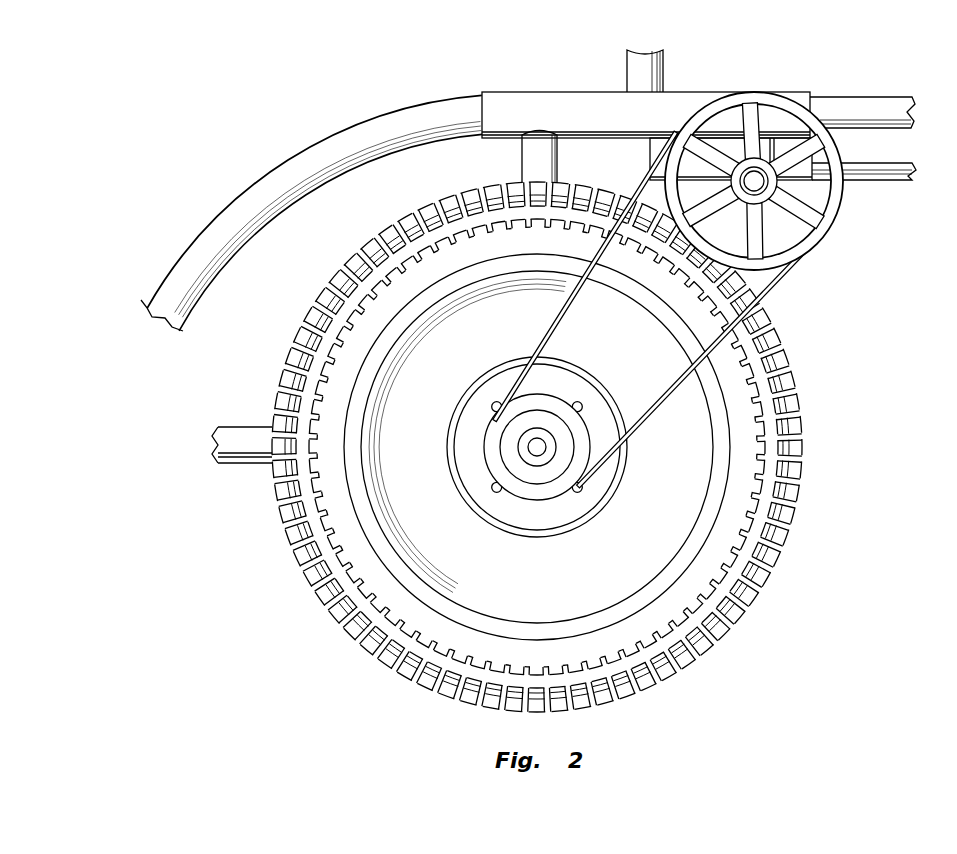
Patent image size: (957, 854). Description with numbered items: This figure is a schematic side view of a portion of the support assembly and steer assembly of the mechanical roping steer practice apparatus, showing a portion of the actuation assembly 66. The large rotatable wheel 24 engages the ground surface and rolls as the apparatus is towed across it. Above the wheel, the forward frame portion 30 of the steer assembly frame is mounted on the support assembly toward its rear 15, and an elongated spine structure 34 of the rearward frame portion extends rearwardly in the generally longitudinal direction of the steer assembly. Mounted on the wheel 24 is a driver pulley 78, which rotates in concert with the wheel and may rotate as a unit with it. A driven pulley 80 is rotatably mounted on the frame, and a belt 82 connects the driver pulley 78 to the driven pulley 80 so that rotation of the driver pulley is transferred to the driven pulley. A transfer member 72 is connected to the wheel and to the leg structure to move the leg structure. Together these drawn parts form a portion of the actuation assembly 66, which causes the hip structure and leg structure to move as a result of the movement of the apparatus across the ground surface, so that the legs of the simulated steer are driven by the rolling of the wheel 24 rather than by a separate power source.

The rear 15 is at (330, 150).
The rotatable wheel 24 is at (700, 575).
The forward frame portion 30 is at (562, 98).
The spine structure 34 is at (852, 102).
The actuation assembly 66 is at (778, 305).
The transfer member 72 is at (872, 175).
The driver pulley 78 is at (522, 447).
The driven pulley 80 is at (822, 225).
The belt 82 is at (778, 277).